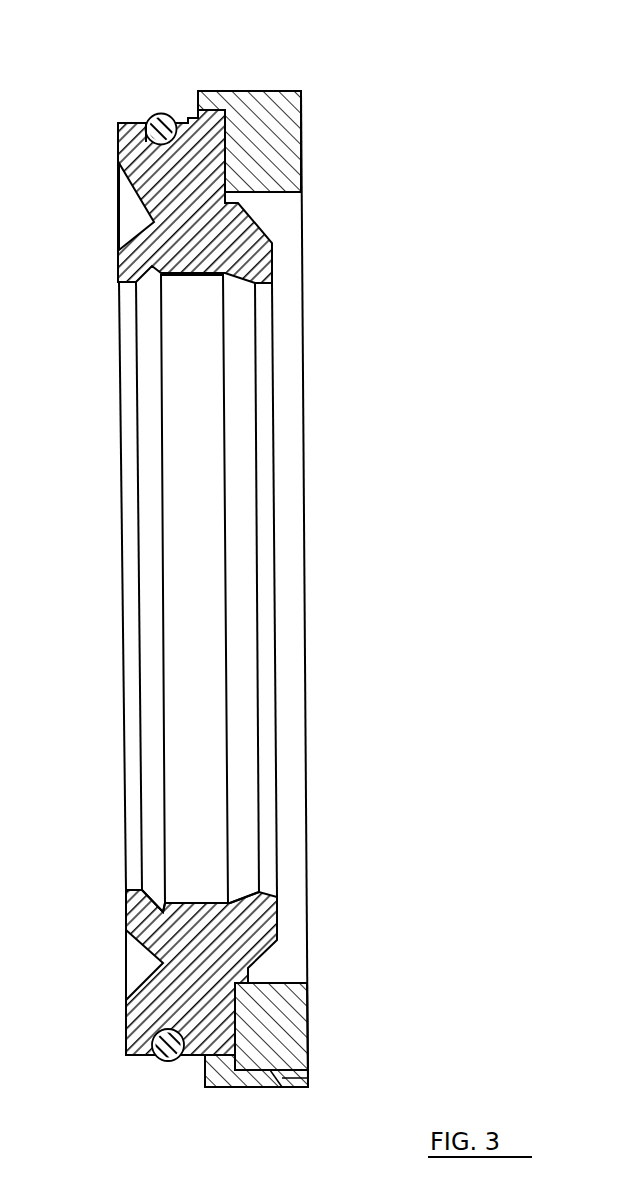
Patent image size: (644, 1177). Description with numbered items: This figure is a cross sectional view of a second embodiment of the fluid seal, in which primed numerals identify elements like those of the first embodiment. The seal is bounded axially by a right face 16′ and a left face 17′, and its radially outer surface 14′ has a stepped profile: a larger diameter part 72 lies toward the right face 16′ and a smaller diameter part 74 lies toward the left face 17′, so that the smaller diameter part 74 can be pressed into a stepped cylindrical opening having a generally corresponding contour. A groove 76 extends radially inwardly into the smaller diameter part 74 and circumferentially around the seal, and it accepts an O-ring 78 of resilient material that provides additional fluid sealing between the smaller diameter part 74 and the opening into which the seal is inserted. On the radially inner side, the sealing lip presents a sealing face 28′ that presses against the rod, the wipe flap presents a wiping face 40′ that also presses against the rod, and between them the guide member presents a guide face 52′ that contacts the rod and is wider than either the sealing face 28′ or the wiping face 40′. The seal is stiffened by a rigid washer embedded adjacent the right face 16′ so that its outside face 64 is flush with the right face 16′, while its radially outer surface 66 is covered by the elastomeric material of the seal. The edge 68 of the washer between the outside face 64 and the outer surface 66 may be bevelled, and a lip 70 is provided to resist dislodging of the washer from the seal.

The outer surface 14′ is at (233, 84).
The right face 16′ is at (324, 1089).
The left face 17′ is at (115, 1040).
The sealing face 28′ is at (274, 890).
The wiping face 40′ is at (130, 889).
The guide face 52′ is at (200, 903).
The outside face 64 is at (312, 1010).
The outer surface 66 is at (278, 1076).
The edge 68 is at (320, 1057).
The lip 70 is at (316, 1081).
The larger diameter part 72 is at (250, 1091).
The smaller diameter part 74 is at (146, 1064).
The groove 76 is at (140, 114).
The O-ring 78 is at (165, 112).